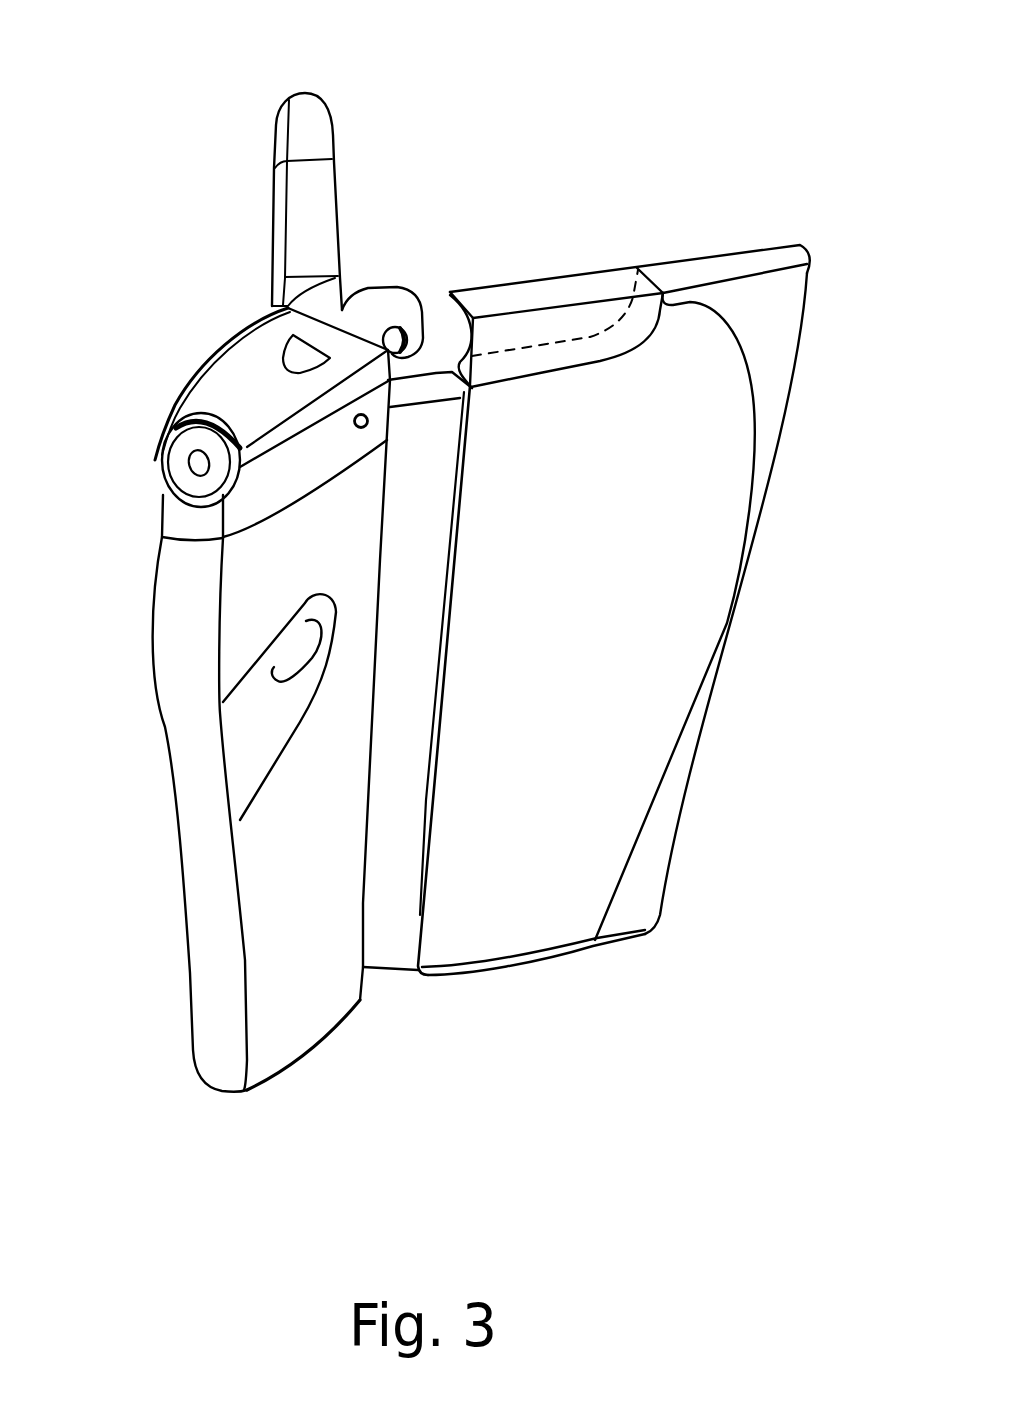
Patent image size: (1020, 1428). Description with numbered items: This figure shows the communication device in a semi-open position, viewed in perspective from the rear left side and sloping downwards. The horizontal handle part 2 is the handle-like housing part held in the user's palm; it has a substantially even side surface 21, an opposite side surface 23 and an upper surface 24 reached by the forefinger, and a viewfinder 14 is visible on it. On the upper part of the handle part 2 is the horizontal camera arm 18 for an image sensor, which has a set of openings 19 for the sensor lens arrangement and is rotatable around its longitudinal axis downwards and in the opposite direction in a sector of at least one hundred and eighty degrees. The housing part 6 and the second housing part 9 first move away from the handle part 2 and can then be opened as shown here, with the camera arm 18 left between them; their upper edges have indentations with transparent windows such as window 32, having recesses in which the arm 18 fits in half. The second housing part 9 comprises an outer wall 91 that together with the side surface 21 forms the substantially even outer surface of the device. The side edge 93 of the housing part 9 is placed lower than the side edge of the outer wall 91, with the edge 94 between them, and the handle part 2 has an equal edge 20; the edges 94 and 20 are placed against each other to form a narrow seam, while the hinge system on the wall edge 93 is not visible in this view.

The housing part 6 is at (368, 72).
The handle part 2 is at (248, 883).
The transparent window 32 is at (303, 198).
The upper surface 24 is at (253, 357).
The viewfinder 14 is at (360, 414).
The camera arm 18 is at (407, 307).
The openings 19 is at (448, 371).
The side surface 23 is at (217, 1013).
The side surface 21 is at (273, 1027).
The edge 20 is at (363, 900).
The second housing part 9 is at (680, 907).
The side edge 93 is at (383, 923).
The edge 94 is at (423, 913).
The outer wall 91 is at (550, 927).